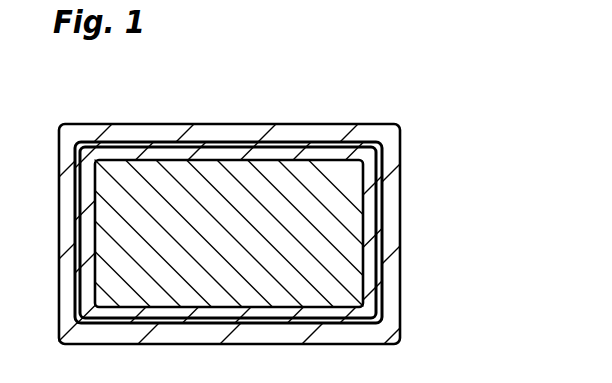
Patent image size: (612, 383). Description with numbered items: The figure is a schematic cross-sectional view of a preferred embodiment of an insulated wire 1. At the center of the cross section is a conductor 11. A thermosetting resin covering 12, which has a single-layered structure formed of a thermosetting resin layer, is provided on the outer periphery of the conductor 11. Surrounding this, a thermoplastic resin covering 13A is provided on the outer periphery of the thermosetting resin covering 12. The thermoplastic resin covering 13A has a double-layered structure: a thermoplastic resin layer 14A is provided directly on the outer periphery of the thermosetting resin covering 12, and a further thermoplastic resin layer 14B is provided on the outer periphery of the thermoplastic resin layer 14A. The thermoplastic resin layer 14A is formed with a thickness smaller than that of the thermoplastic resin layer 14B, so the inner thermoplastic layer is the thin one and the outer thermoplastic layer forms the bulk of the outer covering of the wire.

The insulated wire 1 is at (421, 114).
The conductor 11 is at (352, 203).
The thermosetting resin covering 12 is at (367, 230).
The thermoplastic resin covering 13A is at (462, 260).
The thermoplastic resin layer 14A is at (382, 267).
The thermoplastic resin layer 14B is at (390, 308).